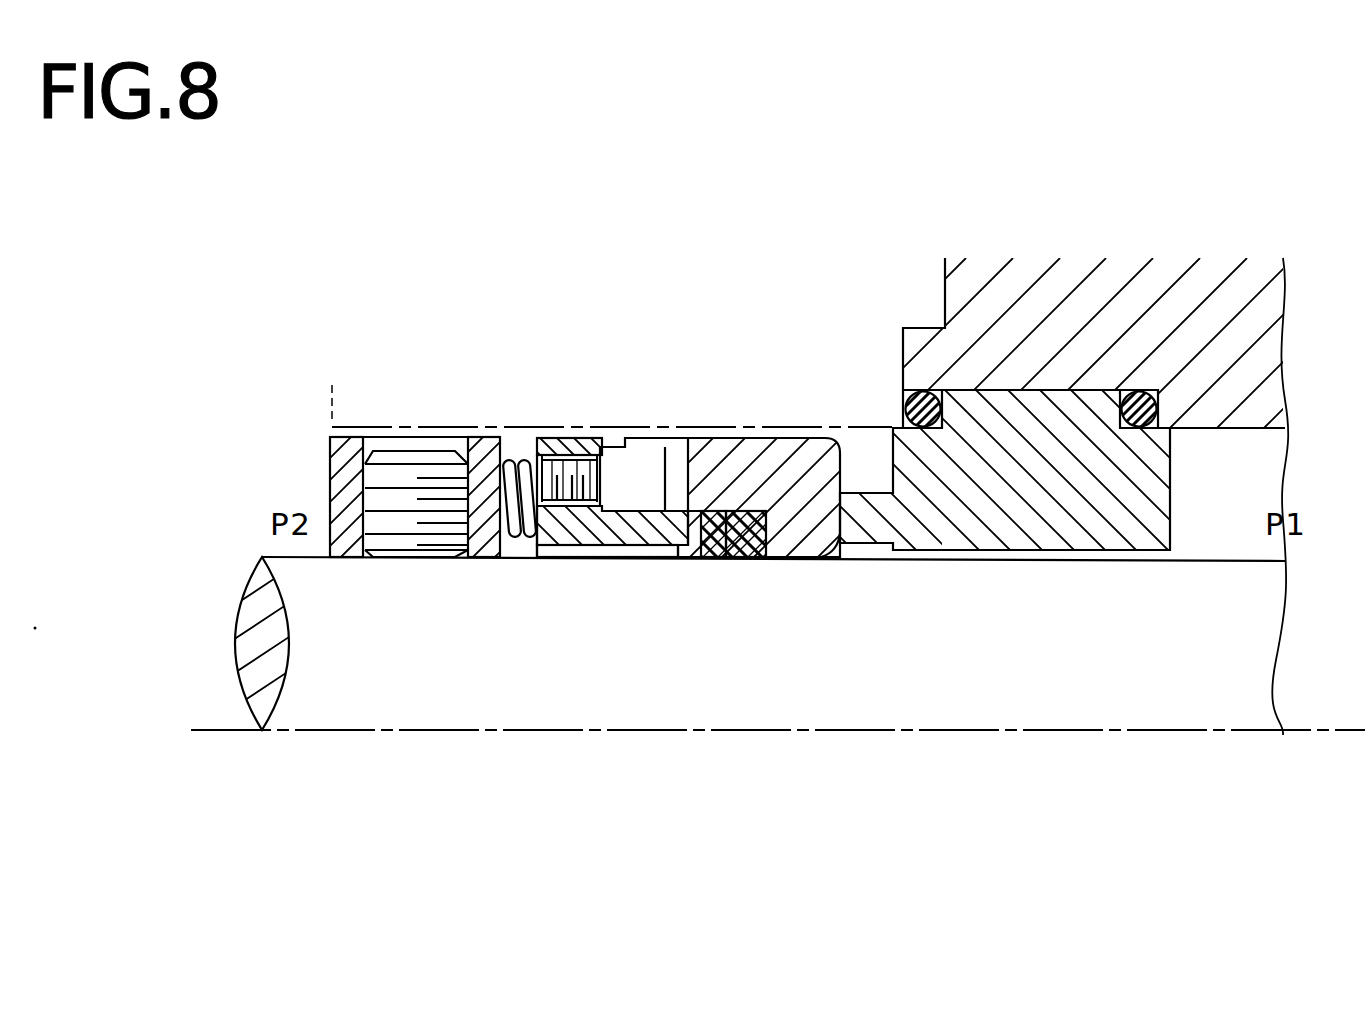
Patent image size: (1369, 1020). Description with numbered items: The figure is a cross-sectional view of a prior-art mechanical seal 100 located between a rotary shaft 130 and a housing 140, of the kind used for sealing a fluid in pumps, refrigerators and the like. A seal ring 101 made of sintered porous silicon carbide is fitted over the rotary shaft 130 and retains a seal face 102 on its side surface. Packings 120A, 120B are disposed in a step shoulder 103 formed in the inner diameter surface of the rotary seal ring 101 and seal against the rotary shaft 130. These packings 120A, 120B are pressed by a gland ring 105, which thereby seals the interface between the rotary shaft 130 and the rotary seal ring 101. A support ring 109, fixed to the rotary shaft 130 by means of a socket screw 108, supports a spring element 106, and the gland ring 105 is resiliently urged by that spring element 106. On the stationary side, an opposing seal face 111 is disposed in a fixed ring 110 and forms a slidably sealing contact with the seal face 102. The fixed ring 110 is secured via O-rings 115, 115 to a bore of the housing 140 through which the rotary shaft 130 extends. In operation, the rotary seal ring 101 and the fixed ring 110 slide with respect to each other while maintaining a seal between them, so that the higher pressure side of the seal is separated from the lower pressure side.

The mechanical seal 100 is at (840, 355).
The seal ring 101 is at (782, 455).
The seal face 102 is at (847, 447).
The step shoulder 103 is at (686, 518).
The gland ring 105 is at (685, 560).
The spring element 106 is at (519, 447).
The socket screw 108 is at (442, 470).
The support ring 109 is at (350, 447).
The fixed ring 110 is at (1140, 533).
The opposing seal face 111 is at (812, 560).
The O-ring 115 is at (912, 398).
The packing 120A is at (753, 560).
The packing 120B is at (715, 560).
The rotary shaft 130 is at (1185, 708).
The housing 140 is at (1040, 300).